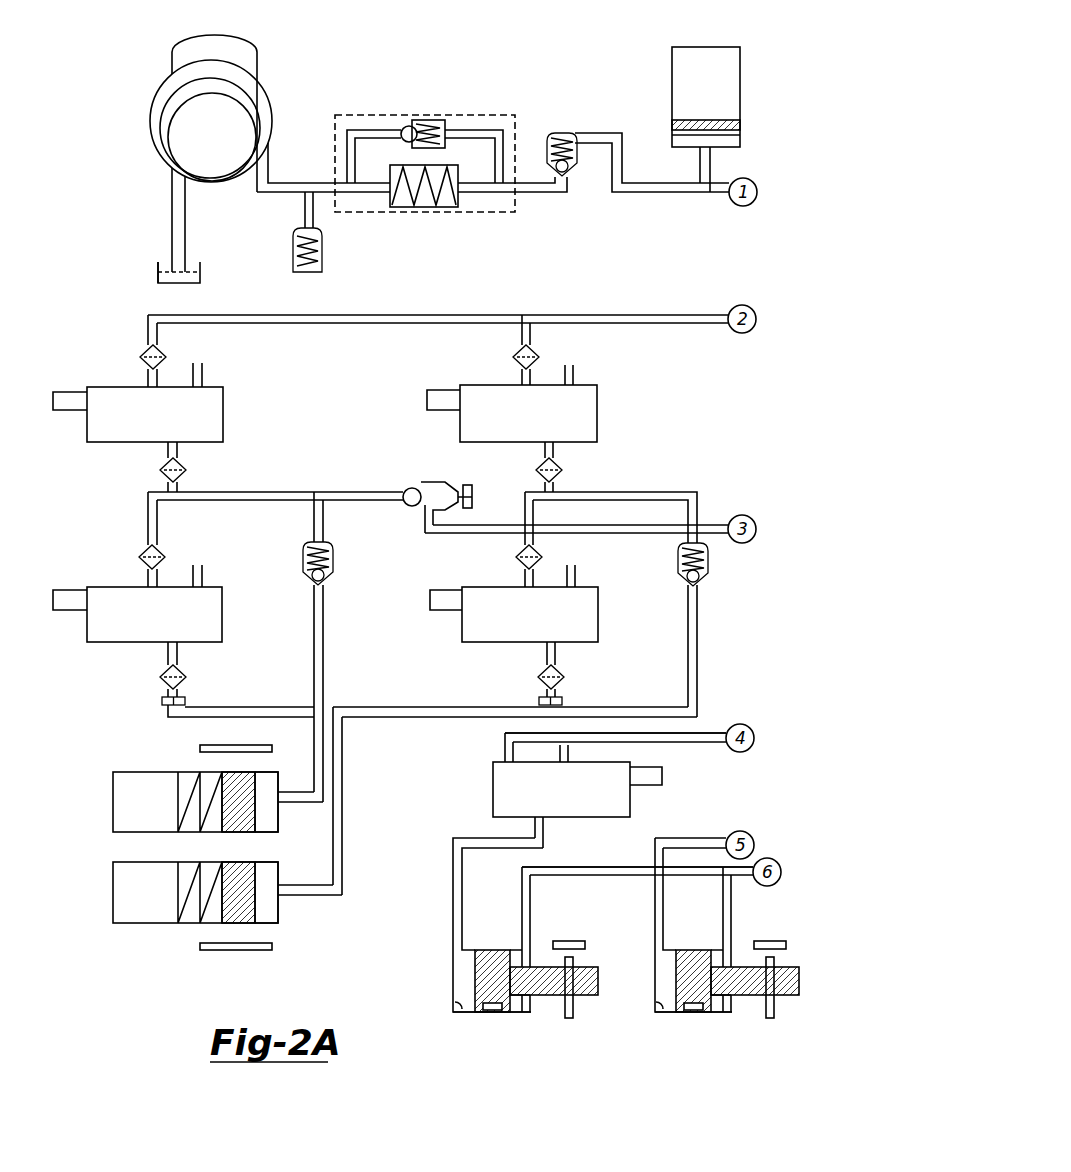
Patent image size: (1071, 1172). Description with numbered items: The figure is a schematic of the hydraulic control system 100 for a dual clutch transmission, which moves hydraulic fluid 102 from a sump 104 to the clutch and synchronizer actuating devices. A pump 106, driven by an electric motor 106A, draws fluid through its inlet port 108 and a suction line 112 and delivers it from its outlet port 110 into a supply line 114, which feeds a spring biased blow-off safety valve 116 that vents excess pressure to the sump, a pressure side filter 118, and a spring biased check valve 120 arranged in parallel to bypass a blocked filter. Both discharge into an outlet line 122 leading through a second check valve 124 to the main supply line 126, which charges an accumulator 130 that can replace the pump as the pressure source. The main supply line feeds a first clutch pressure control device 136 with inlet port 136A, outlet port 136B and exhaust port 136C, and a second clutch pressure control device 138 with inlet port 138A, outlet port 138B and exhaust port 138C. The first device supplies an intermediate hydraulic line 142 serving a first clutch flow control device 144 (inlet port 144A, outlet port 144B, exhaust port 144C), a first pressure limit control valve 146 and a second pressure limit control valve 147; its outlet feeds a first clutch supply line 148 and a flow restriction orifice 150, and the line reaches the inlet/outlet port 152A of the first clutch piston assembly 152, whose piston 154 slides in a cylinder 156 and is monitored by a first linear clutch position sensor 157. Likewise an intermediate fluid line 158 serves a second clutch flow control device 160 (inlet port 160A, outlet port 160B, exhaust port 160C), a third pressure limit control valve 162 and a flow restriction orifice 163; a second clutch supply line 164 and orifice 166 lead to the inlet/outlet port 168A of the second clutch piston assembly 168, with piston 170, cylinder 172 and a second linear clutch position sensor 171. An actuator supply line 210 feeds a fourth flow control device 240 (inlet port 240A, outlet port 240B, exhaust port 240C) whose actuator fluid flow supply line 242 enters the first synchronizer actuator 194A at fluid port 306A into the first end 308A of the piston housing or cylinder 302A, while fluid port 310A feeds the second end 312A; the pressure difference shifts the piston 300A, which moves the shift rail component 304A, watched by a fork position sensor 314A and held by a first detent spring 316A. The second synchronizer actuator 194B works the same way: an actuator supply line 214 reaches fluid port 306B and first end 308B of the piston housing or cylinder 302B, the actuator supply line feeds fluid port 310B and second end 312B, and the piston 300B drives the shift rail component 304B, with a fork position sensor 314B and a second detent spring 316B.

The hydraulic control system 100 is at (145, 44).
The hydraulic fluid 102 is at (195, 268).
The sump 104 is at (164, 266).
The pump 106 is at (255, 93).
The electric motor 106A is at (247, 58).
The inlet port 108 is at (178, 182).
The outlet port 110 is at (271, 160).
The suction line 112 is at (184, 217).
The supply line 114 is at (283, 197).
The spring biased blow-off safety valve 116 is at (322, 255).
The pressure side filter 118 is at (436, 208).
The spring biased check valve 120 is at (428, 118).
The outlet line 122 is at (540, 193).
The second check valve 124 is at (578, 152).
The main supply line 126 is at (670, 193).
The accumulator 130 is at (720, 60).
The first clutch pressure control device 136 is at (223, 418).
The inlet port 136A is at (148, 383).
The outlet port 136B is at (170, 447).
The exhaust port 136C is at (202, 378).
The second clutch pressure control device 138 is at (597, 418).
The inlet port 138A is at (522, 383).
The outlet port 138B is at (545, 447).
The exhaust port 138C is at (575, 378).
The intermediate hydraulic line 142 is at (265, 492).
The first clutch flow control device 144 is at (222, 618).
The inlet port 144A is at (148, 583).
The outlet port 144B is at (170, 647).
The exhaust port 144C is at (202, 578).
The first pressure limit control valve 146 is at (333, 565).
The second pressure limit control valve 147 is at (404, 491).
The first clutch supply line 148 is at (323, 640).
The flow restriction orifice 150 is at (162, 700).
The first clutch piston assembly 152 is at (112, 805).
The inlet/outlet port 152A is at (280, 802).
The piston 154 is at (240, 832).
The cylinder 156 is at (280, 782).
The first linear clutch position sensor 157 is at (200, 748).
The intermediate fluid line 158 is at (657, 492).
The second clutch flow control device 160 is at (598, 618).
The inlet port 160A is at (525, 583).
The outlet port 160B is at (547, 647).
The exhaust port 160C is at (575, 578).
The third pressure limit control valve 162 is at (707, 565).
The flow restriction orifice 163 is at (465, 486).
The second clutch supply line 164 is at (537, 700).
The flow restriction orifice 166 is at (562, 700).
The second clutch piston assembly 168 is at (112, 893).
The inlet/outlet port 168A is at (280, 896).
The piston 170 is at (240, 862).
The second linear clutch position sensor 171 is at (200, 947).
The cylinder 172 is at (258, 920).
The first synchronizer actuator 194A is at (468, 1025).
The second synchronizer actuator 194B is at (669, 1025).
The actuator supply line 210 is at (708, 742).
The actuator supply line 214 is at (690, 838).
The fourth flow control device 240 is at (493, 790).
The inlet port 240A is at (505, 758).
The outlet port 240B is at (543, 825).
The exhaust port 240C is at (568, 758).
The actuator fluid flow supply line 242 is at (453, 882).
The piston 300A is at (480, 970).
The piston 300B is at (681, 970).
The piston housing or cylinder 302A is at (455, 1003).
The piston housing or cylinder 302B is at (657, 1003).
The shift rail component 304A is at (572, 1018).
The shift rail component 304B is at (773, 1018).
The fluid port 306A is at (458, 952).
The fluid port 306B is at (659, 952).
The first end 308A is at (453, 972).
The first end 308B is at (656, 990).
The fluid port 310A is at (530, 935).
The fluid port 310B is at (731, 935).
The second end 312A is at (522, 1012).
The second end 312B is at (723, 1012).
The fork position sensor 314A is at (592, 960).
The fork position sensor 314B is at (793, 960).
The first detent spring 316A is at (490, 1012).
The second detent spring 316B is at (691, 1012).